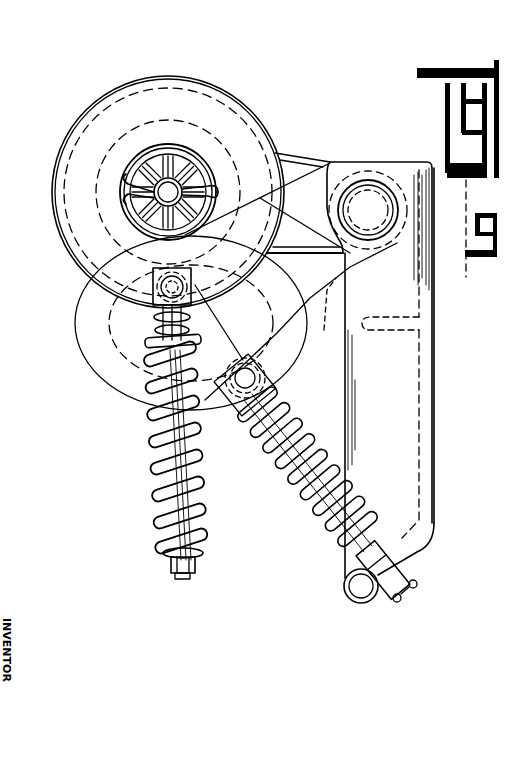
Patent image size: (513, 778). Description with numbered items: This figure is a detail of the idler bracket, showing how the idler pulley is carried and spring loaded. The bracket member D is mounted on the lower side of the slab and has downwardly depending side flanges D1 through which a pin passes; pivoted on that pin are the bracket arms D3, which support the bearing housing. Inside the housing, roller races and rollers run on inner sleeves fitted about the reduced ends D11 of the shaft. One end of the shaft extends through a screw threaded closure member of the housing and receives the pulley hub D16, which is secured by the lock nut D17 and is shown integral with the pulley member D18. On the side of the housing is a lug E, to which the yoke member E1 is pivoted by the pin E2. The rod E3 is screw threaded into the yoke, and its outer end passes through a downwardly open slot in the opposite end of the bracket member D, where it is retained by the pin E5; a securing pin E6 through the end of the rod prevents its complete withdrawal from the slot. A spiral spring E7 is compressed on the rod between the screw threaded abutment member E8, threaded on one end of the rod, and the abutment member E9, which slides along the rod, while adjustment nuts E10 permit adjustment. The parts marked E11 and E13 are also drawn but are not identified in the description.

The bracket member D is at (415, 385).
The side flanges D1 is at (392, 432).
The bracket arms D3 is at (316, 166).
The reduced ends of the shaft D11 is at (170, 178).
The pulley hub D16 is at (140, 170).
The lock nut D17 is at (147, 158).
The pulley member D18 is at (65, 160).
The lug E is at (152, 300).
The yoke member E1 is at (155, 313).
The pin E2 is at (243, 364).
The rod E3 is at (186, 574).
The pin E5 is at (402, 604).
The securing pin E6 is at (196, 566).
The spiral spring E7 is at (160, 475).
The screw threaded abutment member E8 is at (150, 350).
The abutment member E9 is at (160, 553).
The adjustment nuts E10 is at (155, 323).
The second coil spring E11 is at (340, 532).
The spring retainer E13 is at (110, 342).